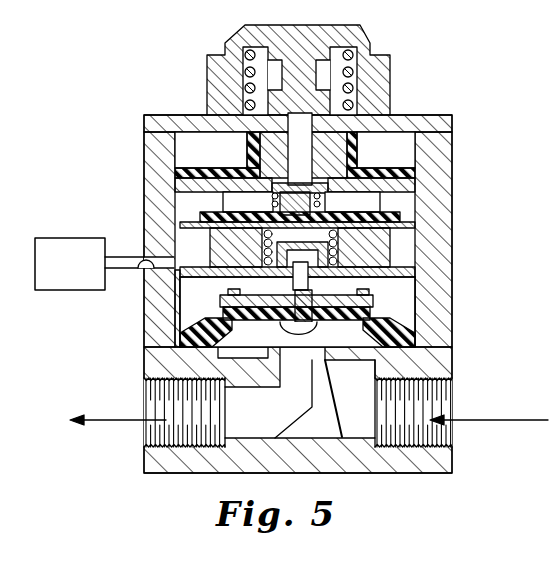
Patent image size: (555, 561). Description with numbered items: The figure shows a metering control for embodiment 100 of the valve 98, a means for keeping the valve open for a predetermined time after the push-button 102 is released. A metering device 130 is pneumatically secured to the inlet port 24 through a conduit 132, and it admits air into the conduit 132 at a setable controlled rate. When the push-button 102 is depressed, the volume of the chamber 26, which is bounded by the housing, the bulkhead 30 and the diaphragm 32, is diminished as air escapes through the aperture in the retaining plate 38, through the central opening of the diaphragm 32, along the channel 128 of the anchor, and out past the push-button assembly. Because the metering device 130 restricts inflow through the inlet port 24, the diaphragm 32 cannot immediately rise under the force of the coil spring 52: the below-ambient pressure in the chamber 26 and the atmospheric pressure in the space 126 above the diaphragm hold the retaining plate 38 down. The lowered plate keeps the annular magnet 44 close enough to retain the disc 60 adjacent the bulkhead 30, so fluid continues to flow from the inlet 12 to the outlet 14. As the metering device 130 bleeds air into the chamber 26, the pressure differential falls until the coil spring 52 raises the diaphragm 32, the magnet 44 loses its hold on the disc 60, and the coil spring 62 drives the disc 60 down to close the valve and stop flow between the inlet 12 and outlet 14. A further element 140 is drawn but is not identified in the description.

The embodiment 100 is at (155, 72).
The valve 98 is at (130, 148).
The push-button 102 is at (370, 36).
The channel 128 is at (302, 140).
The space 126 is at (347, 195).
The diaphragm 32 is at (405, 197).
The retaining plate 38 is at (415, 236).
The chamber 26 is at (415, 262).
The bulkhead 30 is at (405, 283).
The coil spring 52 is at (257, 230).
The annular magnet 44 is at (222, 278).
The coil spring 62 is at (309, 280).
The disc 60 is at (377, 282).
The metering device 130 is at (78, 291).
The conduit 132 is at (113, 256).
The inlet port 24 is at (136, 272).
The outlet 14 is at (144, 437).
The inlet 12 is at (452, 437).
The element 140 is at (207, 556).